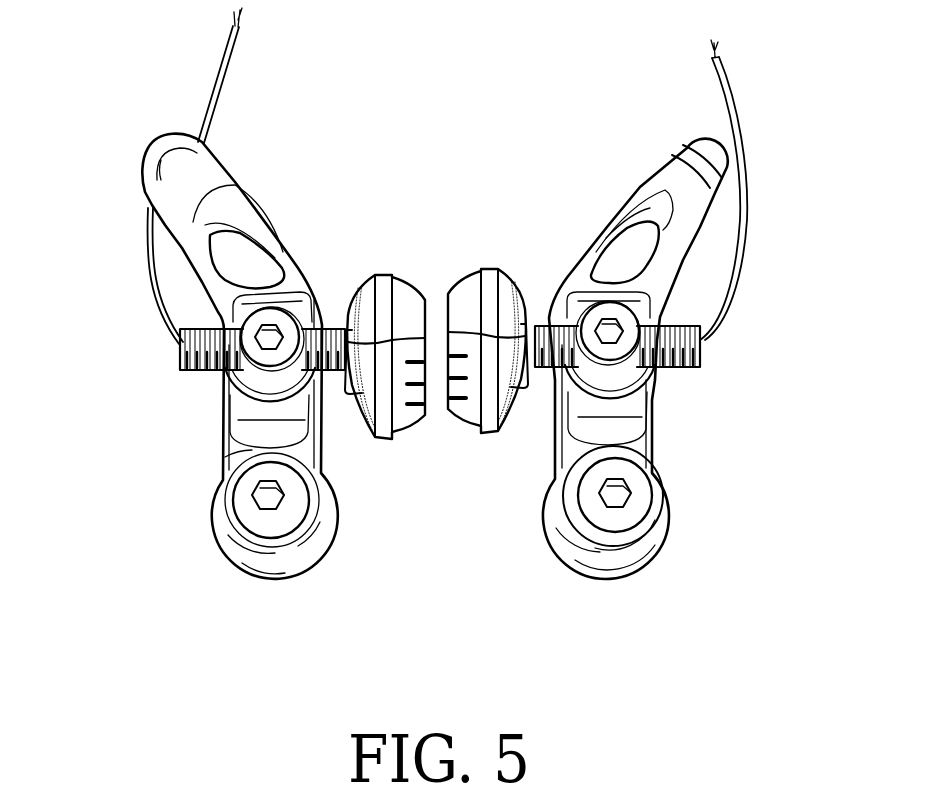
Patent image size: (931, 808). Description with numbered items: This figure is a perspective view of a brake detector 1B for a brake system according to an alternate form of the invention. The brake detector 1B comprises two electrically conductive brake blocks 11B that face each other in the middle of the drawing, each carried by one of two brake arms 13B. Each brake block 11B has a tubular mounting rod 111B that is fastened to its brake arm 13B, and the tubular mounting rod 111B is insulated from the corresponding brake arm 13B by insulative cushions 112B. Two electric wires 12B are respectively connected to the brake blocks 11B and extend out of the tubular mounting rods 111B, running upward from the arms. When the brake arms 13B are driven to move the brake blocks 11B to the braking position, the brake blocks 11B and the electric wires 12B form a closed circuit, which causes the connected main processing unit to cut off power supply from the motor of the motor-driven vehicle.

The brake detector 1B is at (458, 297).
The brake block 11B is at (363, 283).
The electric wire 12B is at (213, 117).
The brake arm 13B is at (227, 455).
The tubular mounting rod 111B is at (183, 347).
The insulative cushion 112B is at (287, 390).